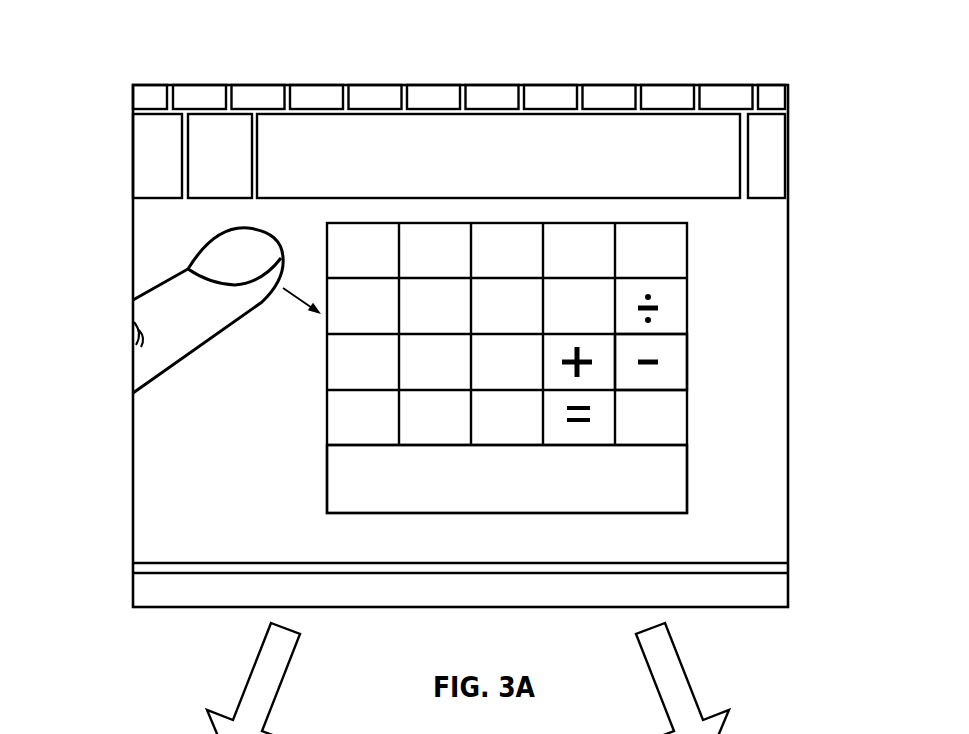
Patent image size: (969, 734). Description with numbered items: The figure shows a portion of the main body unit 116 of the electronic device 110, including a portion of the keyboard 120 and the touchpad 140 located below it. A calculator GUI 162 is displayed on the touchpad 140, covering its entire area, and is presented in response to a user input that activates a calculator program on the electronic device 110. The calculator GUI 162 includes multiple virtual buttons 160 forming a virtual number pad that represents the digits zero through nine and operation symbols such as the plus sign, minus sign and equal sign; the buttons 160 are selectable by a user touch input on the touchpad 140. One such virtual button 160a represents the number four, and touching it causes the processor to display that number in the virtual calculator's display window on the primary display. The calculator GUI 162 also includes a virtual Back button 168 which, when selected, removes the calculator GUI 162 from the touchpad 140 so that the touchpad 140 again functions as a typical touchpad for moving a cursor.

The electronic device 110 is at (380, 44).
The keyboard 120 is at (280, 133).
The calculator GUI 162 is at (458, 351).
The touchpad 140 is at (673, 364).
The virtual button 160a is at (327, 330).
The virtual buttons 160 is at (327, 385).
The main body unit 116 is at (200, 550).
The Back button 168 is at (417, 492).